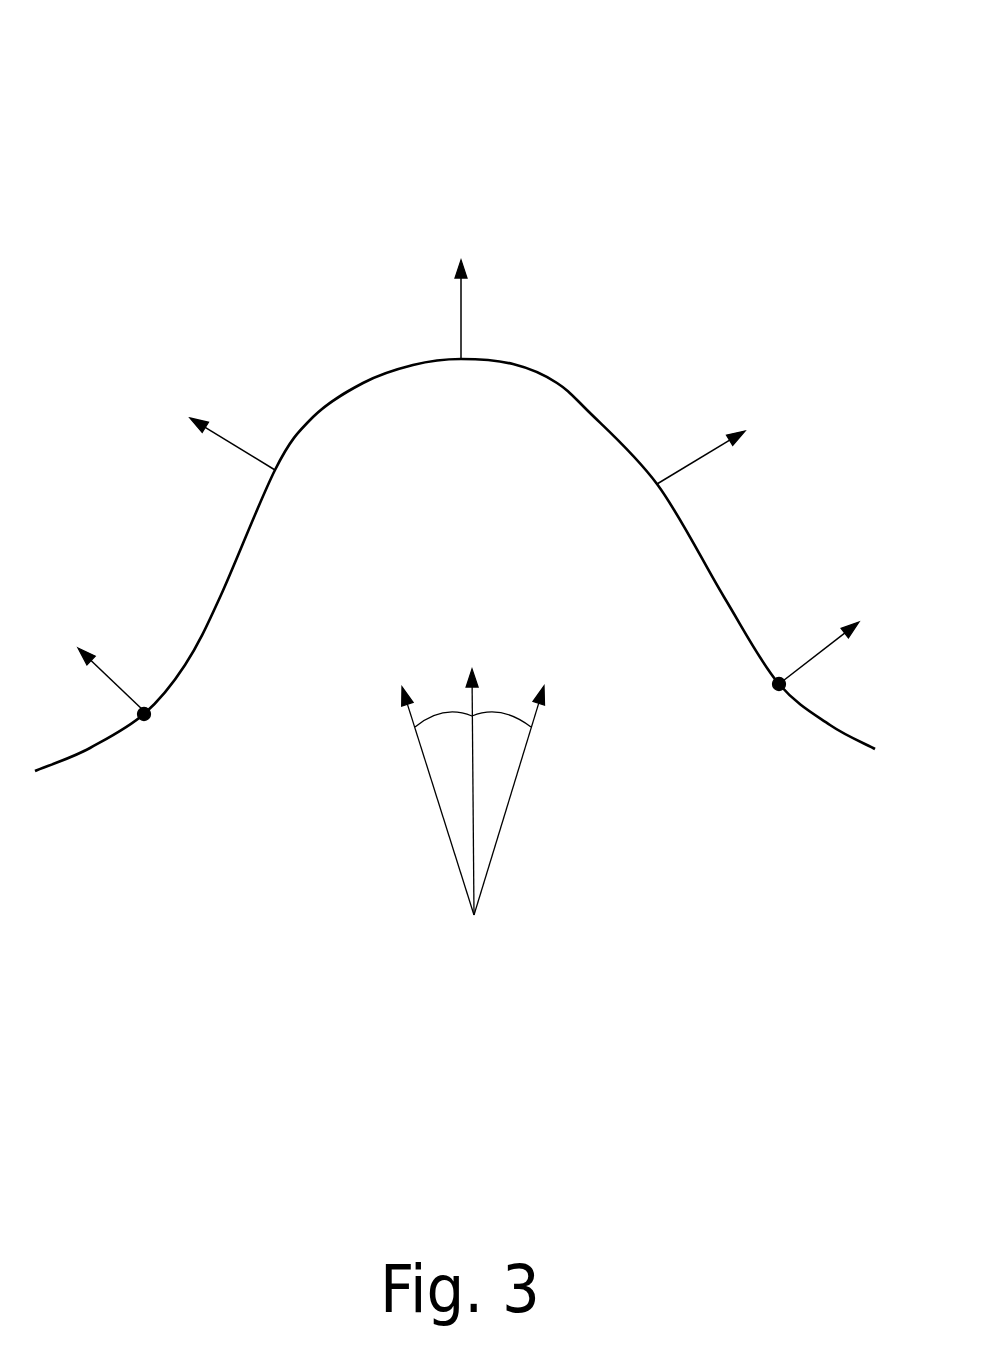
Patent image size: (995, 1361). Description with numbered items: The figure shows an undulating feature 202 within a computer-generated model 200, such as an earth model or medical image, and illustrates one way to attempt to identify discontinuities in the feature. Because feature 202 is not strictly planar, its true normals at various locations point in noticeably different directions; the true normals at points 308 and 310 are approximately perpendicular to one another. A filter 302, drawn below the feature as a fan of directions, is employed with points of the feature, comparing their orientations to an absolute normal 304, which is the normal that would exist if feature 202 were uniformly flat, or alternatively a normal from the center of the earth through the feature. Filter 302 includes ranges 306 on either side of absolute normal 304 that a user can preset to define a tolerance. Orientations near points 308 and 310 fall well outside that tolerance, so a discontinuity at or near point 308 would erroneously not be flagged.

The computer-generated model 200 is at (207, 47).
The feature 202 is at (583, 412).
The filter 302 is at (495, 941).
The absolute normal 304 is at (469, 656).
The ranges 306 is at (436, 712).
The point 308 is at (148, 718).
The point 310 is at (775, 690).